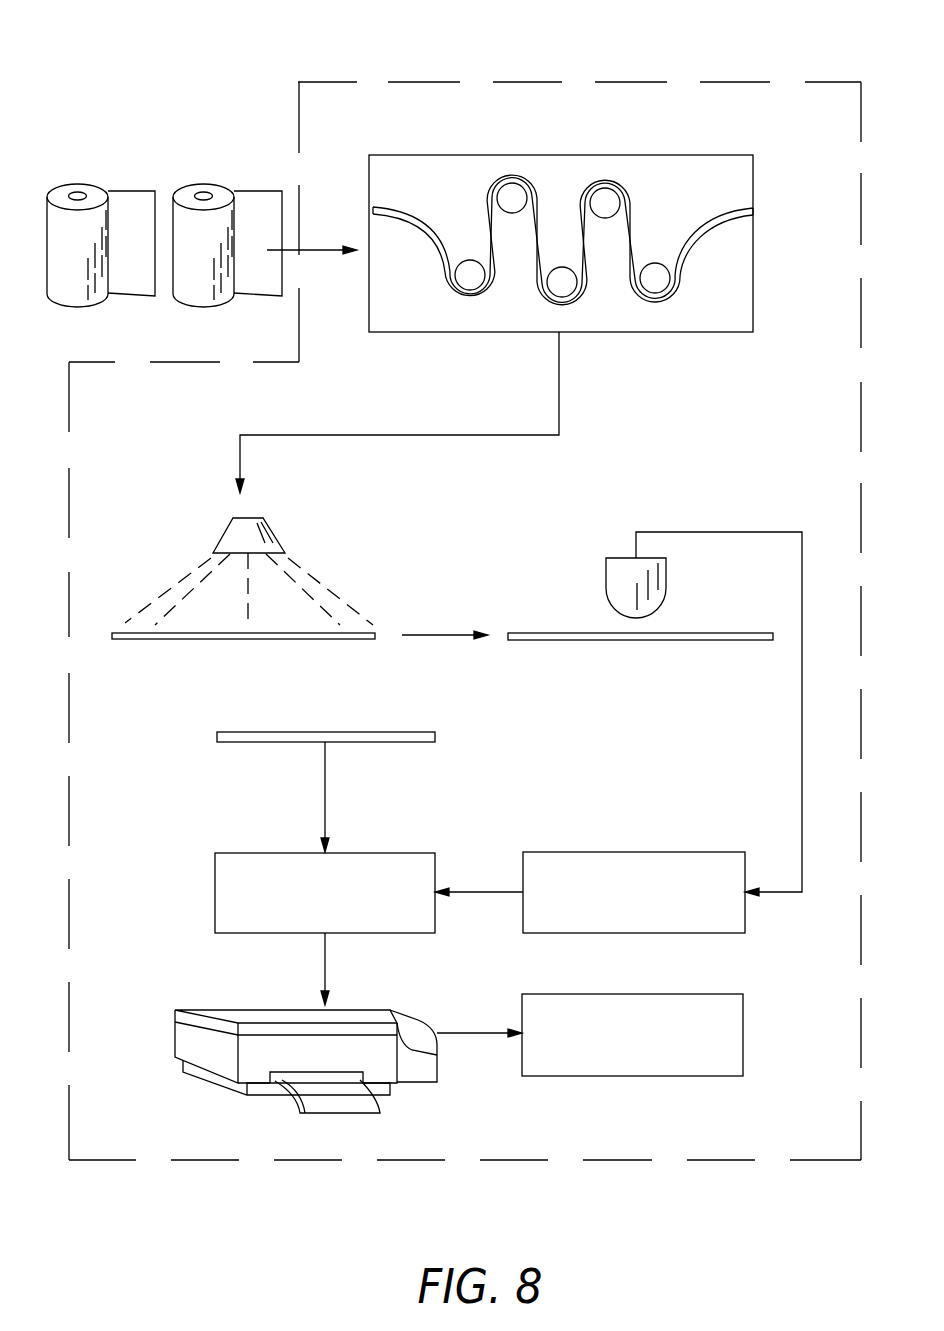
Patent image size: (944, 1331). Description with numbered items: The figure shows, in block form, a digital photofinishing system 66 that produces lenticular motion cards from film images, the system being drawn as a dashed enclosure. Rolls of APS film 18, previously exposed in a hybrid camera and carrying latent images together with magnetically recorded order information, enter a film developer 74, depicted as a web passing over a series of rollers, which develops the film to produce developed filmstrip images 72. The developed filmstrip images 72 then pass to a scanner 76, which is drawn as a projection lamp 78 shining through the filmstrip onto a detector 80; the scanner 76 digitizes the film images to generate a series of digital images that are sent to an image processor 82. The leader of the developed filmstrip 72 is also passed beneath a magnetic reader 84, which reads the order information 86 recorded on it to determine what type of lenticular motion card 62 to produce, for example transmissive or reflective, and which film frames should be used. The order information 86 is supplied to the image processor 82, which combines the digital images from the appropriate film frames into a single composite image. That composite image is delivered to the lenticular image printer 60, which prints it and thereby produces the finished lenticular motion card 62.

The APS film 18 is at (118, 190).
The lenticular image printer 60 is at (290, 1010).
The lenticular motion card 62 is at (632, 1076).
The digital photofinishing system 66 is at (630, 82).
The developed filmstrip images 72 is at (712, 212).
The film developer 74 is at (559, 155).
The scanner 76 is at (171, 465).
The projection lamp 78 is at (221, 533).
The detector 80 is at (250, 742).
The image processor 82 is at (215, 892).
The magnetic reader 84 is at (622, 558).
The order information 86 is at (633, 933).